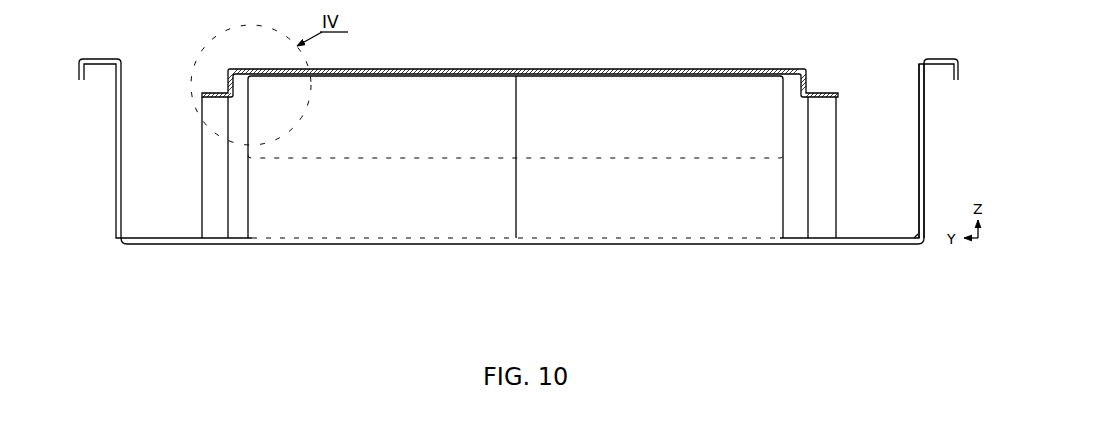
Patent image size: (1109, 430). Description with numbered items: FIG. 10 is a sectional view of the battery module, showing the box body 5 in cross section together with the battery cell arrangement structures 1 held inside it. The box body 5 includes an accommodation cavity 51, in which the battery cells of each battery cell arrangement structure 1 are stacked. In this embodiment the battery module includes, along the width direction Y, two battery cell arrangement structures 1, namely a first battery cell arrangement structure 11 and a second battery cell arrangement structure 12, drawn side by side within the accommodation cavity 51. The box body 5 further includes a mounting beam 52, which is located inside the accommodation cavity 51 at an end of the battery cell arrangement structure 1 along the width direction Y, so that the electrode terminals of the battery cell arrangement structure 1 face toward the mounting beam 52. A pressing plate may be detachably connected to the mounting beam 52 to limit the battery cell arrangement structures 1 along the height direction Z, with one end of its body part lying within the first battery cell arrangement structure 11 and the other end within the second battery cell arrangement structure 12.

The battery cell arrangement structure 1 is at (510, 284).
The box body 5 is at (116, 194).
The first battery cell arrangement structure 11 is at (555, 82).
The second battery cell arrangement structure 12 is at (648, 236).
The accommodation cavity 51 is at (892, 103).
The mounting beam 52 is at (213, 226).